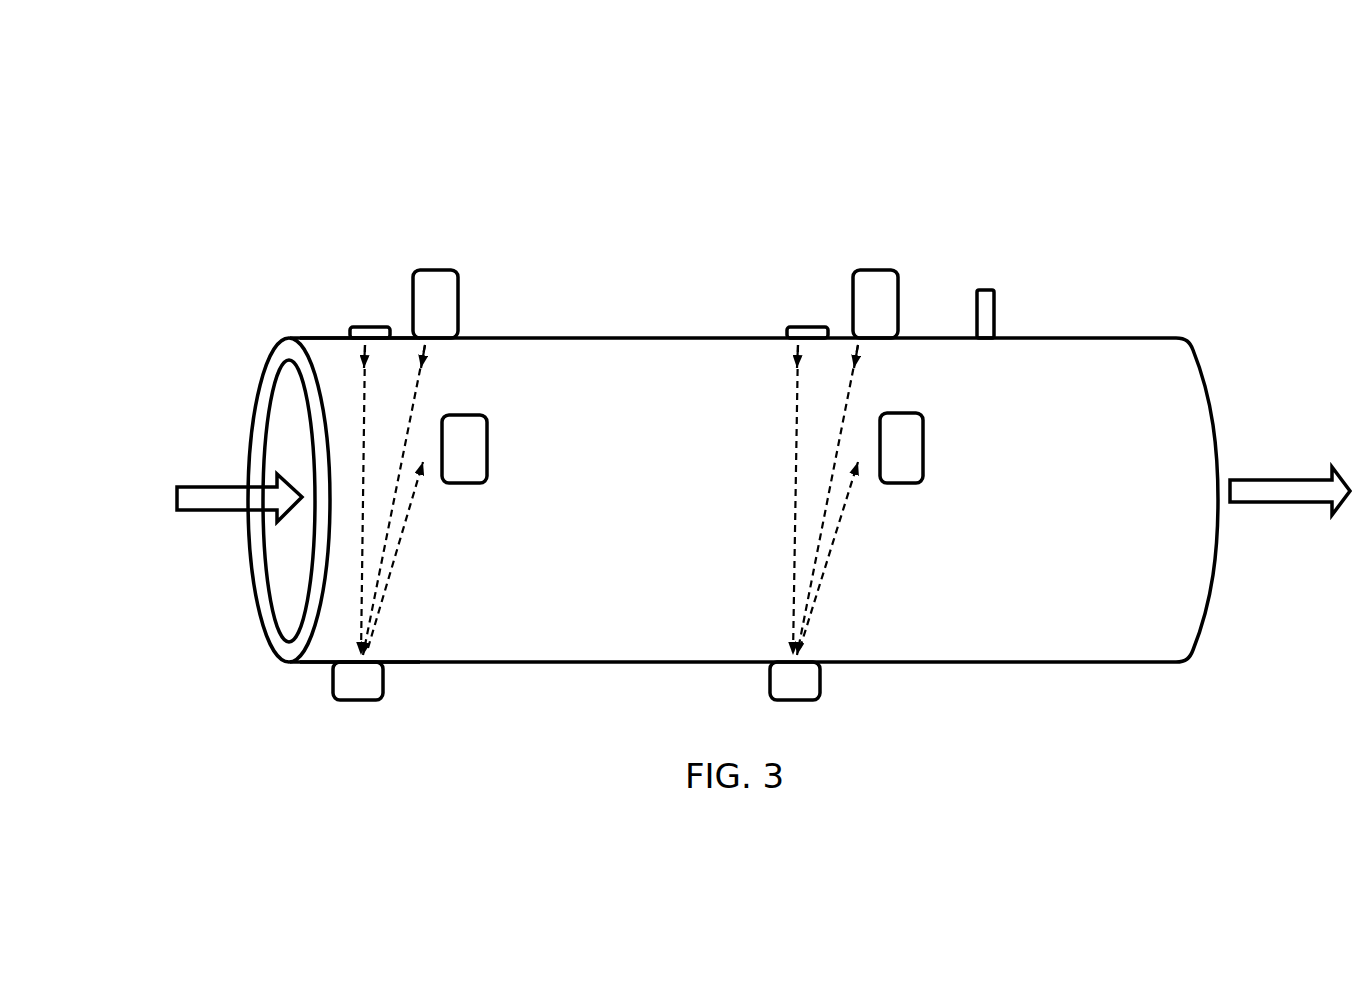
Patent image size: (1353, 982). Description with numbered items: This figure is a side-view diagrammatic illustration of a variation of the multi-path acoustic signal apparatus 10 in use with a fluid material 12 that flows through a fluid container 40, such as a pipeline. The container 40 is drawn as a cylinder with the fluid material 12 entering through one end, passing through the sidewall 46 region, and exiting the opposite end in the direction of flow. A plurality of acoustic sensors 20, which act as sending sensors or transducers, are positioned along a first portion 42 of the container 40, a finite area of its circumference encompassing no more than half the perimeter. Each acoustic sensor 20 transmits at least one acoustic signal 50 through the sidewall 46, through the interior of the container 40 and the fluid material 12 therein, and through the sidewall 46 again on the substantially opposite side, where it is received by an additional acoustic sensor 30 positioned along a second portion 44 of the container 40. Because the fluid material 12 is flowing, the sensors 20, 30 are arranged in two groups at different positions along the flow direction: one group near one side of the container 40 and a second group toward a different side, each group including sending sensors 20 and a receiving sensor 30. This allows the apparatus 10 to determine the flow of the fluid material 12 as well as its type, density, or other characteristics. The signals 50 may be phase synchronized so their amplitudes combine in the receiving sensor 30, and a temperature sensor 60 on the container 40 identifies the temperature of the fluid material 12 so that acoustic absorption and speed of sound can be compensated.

The multi-path acoustic signal apparatus 10 is at (178, 178).
The fluid material 12 is at (238, 492).
The acoustic sensors 20 is at (379, 326).
The acoustic sensor 30 is at (360, 678).
The fluid container 40 is at (1122, 633).
The first portion 42 is at (340, 314).
The second portion 44 is at (325, 727).
The sidewall 46 is at (283, 336).
The acoustic signal 50 is at (400, 545).
The temperature sensor 60 is at (994, 300).